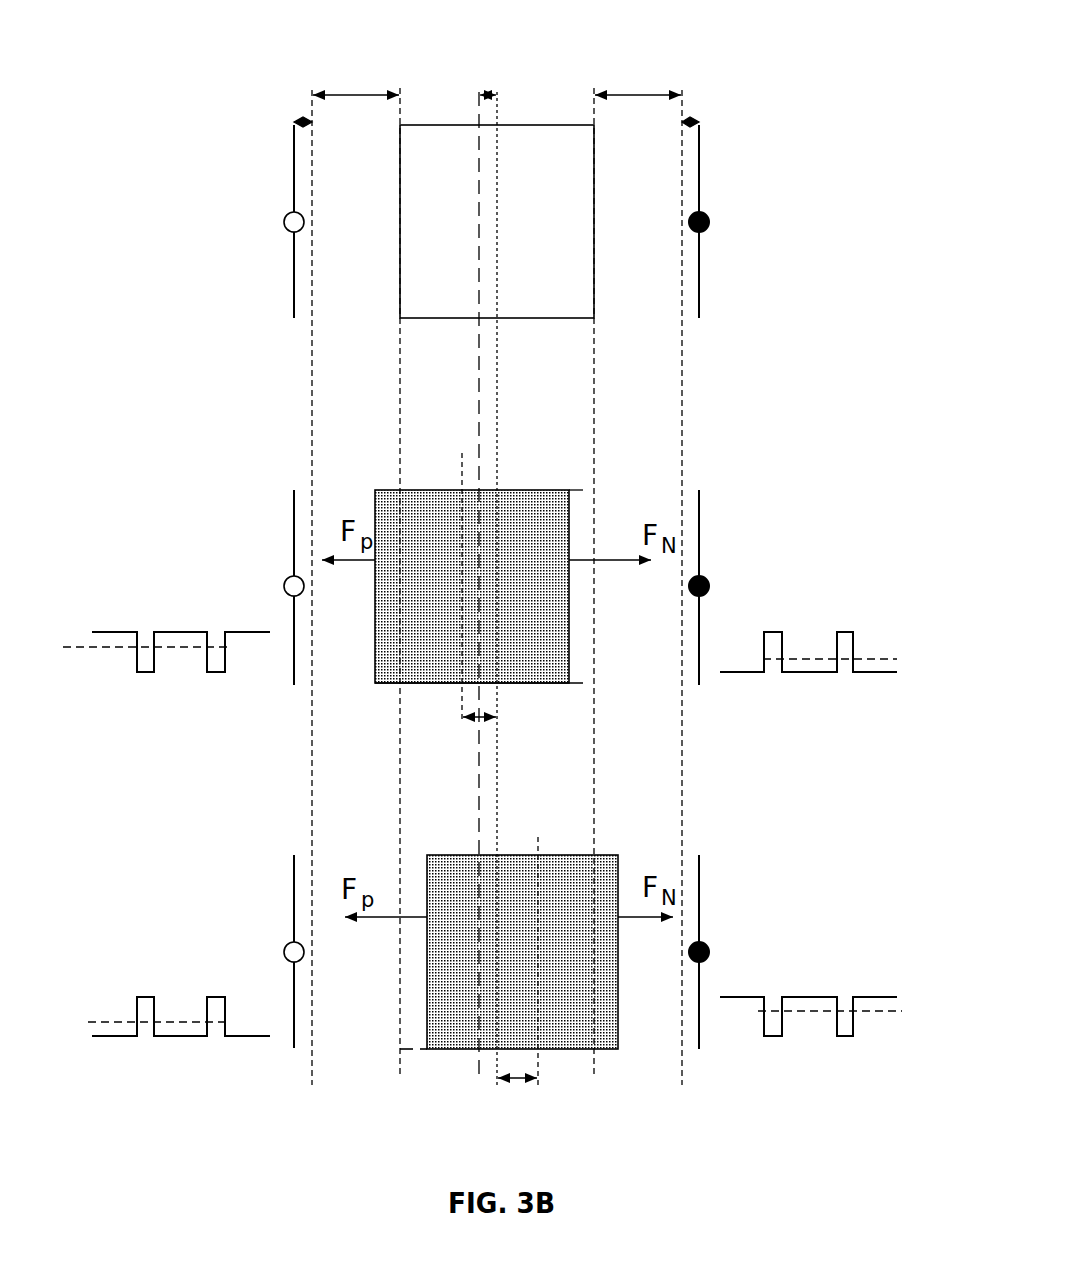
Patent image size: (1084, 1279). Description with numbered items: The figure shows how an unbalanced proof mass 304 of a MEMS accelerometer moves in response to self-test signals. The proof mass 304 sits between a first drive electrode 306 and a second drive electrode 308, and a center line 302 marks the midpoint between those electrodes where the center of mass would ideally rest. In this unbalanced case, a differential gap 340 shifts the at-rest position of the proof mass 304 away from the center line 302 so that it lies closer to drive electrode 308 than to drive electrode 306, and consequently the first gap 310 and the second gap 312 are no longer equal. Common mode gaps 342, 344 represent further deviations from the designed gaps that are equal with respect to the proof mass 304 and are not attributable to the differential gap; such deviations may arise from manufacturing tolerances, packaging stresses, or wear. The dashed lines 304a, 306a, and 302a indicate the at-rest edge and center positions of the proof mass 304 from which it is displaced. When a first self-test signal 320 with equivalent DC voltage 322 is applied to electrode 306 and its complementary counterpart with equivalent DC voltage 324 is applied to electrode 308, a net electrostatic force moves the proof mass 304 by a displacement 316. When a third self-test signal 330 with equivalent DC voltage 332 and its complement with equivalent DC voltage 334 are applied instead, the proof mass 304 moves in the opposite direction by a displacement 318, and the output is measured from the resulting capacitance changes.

The center line 302 is at (479, 90).
The differential gap 340 is at (497, 90).
The initial position 304a is at (400, 107).
The second edge of magnetic element 306a is at (594, 107).
The first gap 310 is at (356, 73).
The second gap 312 is at (638, 77).
The common mode gap 342 is at (303, 117).
The common mode gap 344 is at (690, 117).
The first drive electrode 306 is at (262, 586).
The second drive electrode 308 is at (730, 587).
The proof mass 304 is at (496, 587).
The shifted center axis 302a is at (577, 489).
The displacement 316 is at (475, 720).
The displacement 318 is at (522, 1082).
The self-test signal 320 is at (502, 648).
The first equivalent DC voltage 322 is at (172, 652).
The second equivalent DC voltage 324 is at (807, 657).
The self-test signal 330 is at (502, 1006).
The third equivalent DC voltage 332 is at (184, 1022).
The fourth equivalent DC voltage 334 is at (809, 1022).